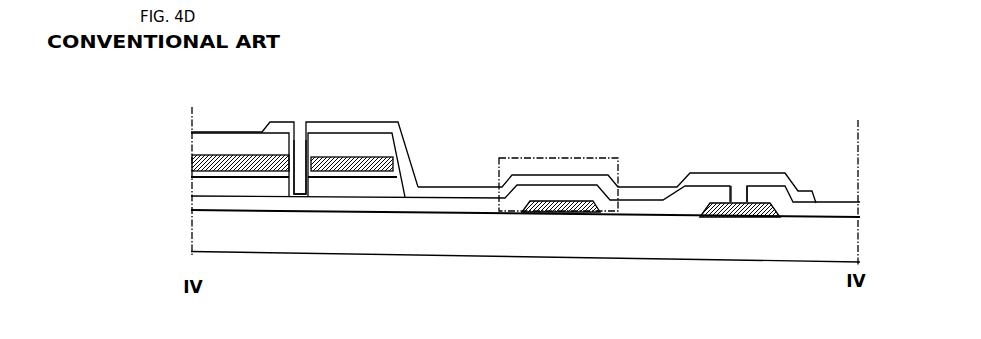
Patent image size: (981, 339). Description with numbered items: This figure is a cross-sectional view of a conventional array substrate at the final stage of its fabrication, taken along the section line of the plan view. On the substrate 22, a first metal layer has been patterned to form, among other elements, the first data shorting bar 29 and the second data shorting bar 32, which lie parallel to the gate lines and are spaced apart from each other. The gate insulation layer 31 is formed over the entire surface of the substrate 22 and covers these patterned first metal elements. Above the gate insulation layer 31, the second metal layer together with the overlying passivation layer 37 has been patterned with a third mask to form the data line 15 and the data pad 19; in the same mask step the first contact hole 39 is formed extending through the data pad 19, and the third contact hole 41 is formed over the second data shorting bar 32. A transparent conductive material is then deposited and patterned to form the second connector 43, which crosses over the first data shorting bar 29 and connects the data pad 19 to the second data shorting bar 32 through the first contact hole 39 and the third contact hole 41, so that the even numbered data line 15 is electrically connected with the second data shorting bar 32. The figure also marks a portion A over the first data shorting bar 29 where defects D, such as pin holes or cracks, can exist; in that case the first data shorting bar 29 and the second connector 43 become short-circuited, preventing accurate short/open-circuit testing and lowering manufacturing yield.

The data line 15 is at (229, 153).
The data pad 19 is at (348, 157).
The substrate 22 is at (549, 248).
The first data shorting bar 29 is at (535, 218).
The gate insulation layer 31 is at (673, 188).
The second data shorting bar 32 is at (733, 218).
The passivation layer 37 is at (252, 145).
The first contact hole 39 is at (300, 162).
The third contact hole 41 is at (740, 182).
The second connector 43 is at (450, 192).
The portion A is at (558, 158).
The defects D is at (583, 190).